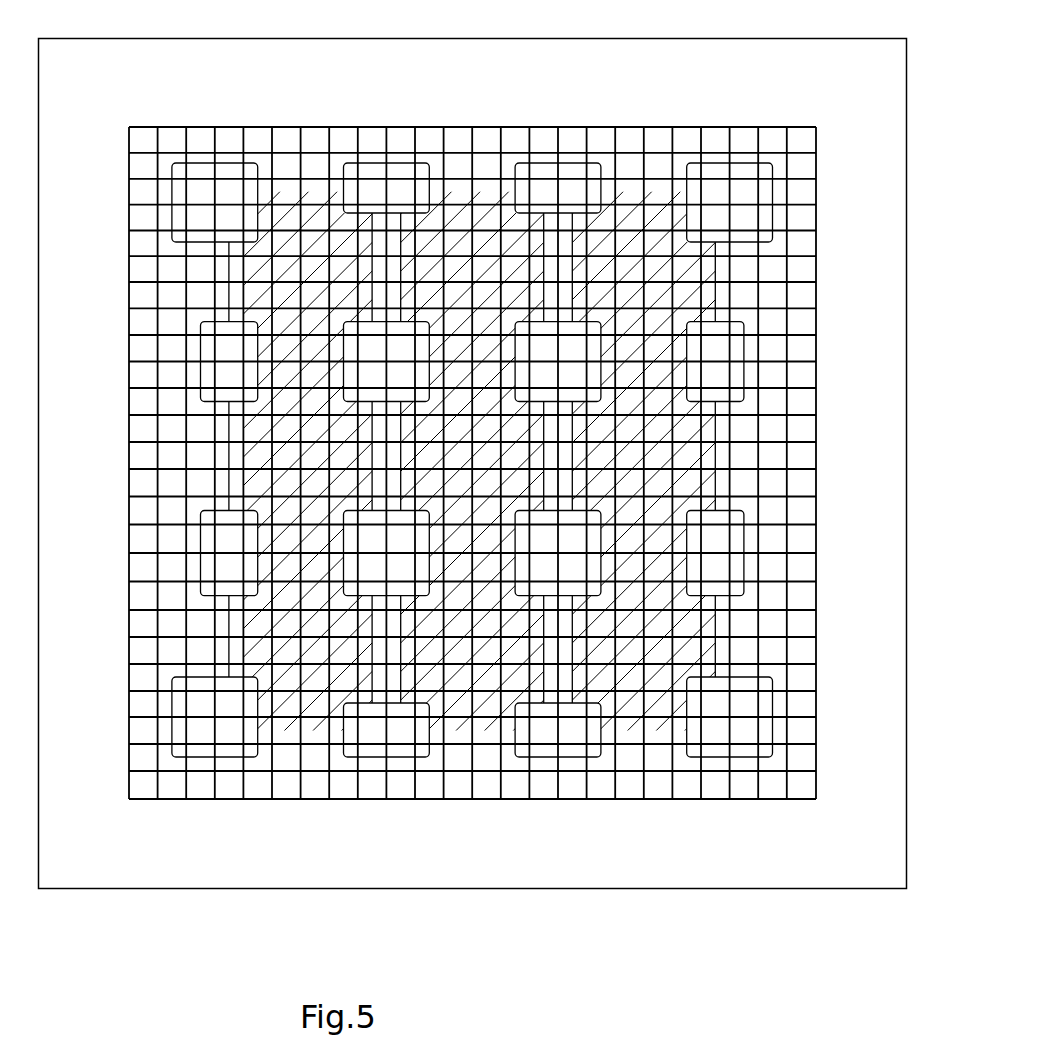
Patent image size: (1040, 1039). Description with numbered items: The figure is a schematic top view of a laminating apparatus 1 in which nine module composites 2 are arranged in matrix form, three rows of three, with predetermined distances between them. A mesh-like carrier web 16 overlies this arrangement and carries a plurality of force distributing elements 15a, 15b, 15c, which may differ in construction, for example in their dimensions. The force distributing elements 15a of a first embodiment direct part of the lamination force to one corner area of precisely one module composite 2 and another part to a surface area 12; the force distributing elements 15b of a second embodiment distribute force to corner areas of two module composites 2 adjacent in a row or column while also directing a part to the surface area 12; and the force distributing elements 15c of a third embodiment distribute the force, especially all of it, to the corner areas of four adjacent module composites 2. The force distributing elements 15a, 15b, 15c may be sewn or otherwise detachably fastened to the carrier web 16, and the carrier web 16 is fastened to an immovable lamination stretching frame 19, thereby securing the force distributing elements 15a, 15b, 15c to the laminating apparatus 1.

The laminating apparatus 1 is at (160, 924).
The module composite 2 is at (282, 220).
The surface area 12 is at (560, 260).
The force distributing element according to a first embodiment 15a is at (195, 172).
The force distributing element according to a second embodiment 15b is at (375, 182).
The force distributing element according to a third embodiment 15c is at (398, 352).
The carrier web 16 is at (820, 186).
The lamination stretching frame 19 is at (880, 833).